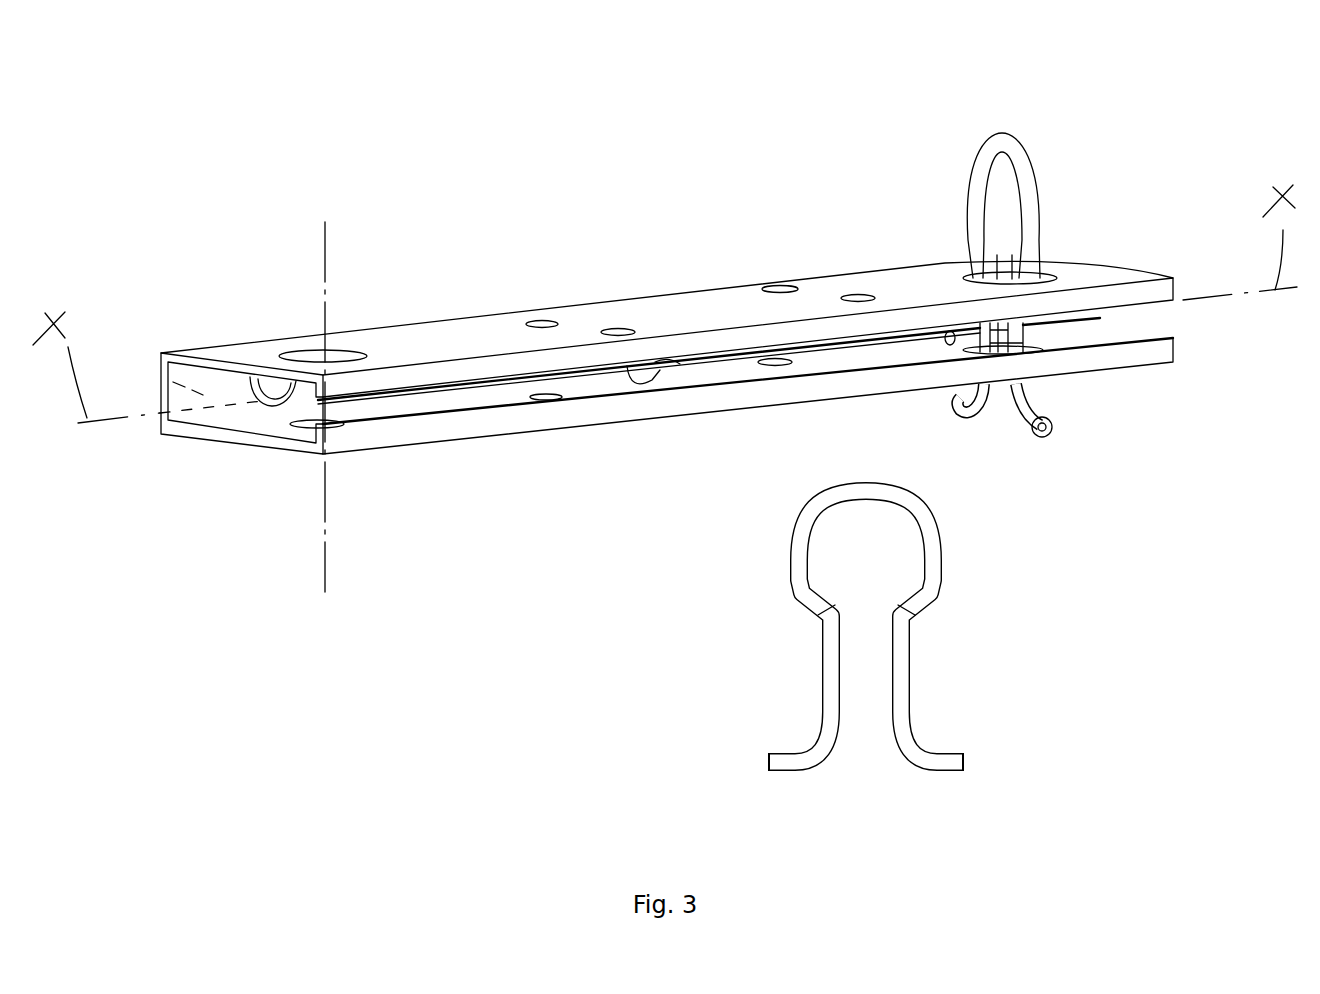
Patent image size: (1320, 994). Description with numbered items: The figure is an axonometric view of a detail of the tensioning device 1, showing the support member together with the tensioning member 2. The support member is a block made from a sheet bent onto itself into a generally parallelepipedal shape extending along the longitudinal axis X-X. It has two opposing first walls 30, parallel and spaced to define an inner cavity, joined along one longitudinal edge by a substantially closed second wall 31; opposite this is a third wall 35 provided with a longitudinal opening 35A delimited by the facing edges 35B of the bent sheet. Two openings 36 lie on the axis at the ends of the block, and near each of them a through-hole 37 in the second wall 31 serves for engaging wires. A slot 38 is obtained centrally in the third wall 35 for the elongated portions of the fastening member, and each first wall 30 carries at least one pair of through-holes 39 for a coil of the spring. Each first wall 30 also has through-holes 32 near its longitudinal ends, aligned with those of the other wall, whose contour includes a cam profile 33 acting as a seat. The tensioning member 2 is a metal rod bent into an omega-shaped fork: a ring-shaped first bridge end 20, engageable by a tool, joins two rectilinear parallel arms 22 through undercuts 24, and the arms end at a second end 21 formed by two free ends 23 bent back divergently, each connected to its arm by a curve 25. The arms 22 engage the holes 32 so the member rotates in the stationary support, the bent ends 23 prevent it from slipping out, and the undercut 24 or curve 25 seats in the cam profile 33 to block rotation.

The device 1 is at (403, 192).
The tensioning member 2 is at (1043, 162).
The first bridge end 20 is at (923, 508).
The second end 21 is at (973, 846).
The arms 22 is at (822, 643).
The free ends 23 is at (940, 772).
The undercut 24 is at (800, 606).
The curve 25 is at (793, 748).
The first walls 30 is at (445, 340).
The second wall 31 is at (160, 364).
The through-hole 32 is at (334, 354).
The cam profile 33 is at (307, 348).
The third wall 35 is at (1037, 300).
The longitudinal opening 35A is at (822, 348).
The edges 35B is at (387, 375).
The openings 36 is at (1132, 323).
The through-hole 37 is at (228, 340).
The slot 38 is at (660, 372).
The pair of through-holes 39 is at (617, 332).